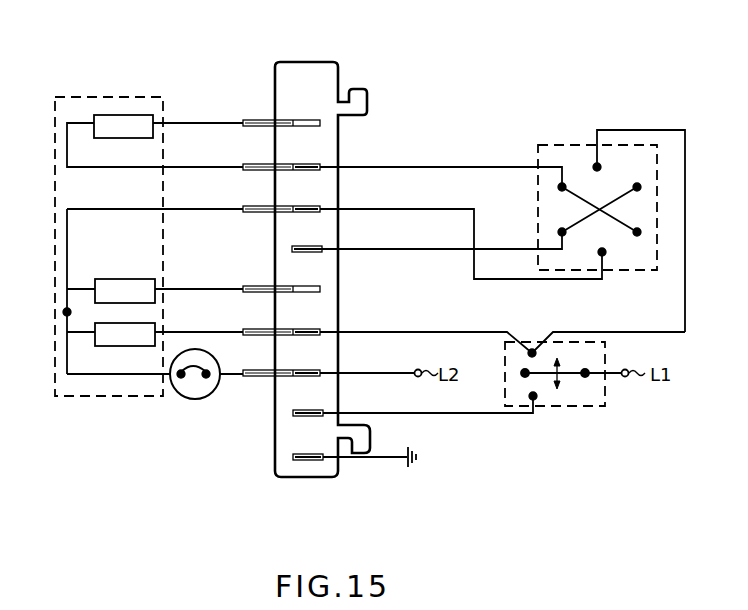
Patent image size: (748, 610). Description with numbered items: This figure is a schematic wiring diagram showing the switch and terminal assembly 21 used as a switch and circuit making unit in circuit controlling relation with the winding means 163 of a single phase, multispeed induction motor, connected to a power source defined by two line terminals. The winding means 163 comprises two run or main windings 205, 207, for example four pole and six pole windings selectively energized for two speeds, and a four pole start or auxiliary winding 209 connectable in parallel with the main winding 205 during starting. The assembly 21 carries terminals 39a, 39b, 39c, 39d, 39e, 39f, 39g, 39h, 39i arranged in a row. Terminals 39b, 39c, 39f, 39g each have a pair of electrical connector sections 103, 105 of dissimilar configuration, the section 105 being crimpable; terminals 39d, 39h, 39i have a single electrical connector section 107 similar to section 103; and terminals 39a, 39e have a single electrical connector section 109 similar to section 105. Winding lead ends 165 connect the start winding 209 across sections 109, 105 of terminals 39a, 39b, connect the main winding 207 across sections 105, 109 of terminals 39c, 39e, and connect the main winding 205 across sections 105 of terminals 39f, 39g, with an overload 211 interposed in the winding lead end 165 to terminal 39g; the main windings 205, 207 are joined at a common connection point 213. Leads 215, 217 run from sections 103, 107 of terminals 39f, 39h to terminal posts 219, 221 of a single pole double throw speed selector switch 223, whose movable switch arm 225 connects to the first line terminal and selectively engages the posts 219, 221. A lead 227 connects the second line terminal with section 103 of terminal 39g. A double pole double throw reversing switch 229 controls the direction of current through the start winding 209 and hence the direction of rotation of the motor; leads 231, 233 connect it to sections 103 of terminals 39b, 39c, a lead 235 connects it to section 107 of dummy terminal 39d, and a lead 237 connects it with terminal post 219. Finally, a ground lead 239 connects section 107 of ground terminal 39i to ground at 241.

The switch and terminal assembly 21 is at (270, 56).
The terminal 39a is at (296, 121).
The terminal 39b is at (296, 164).
The terminal 39c is at (296, 206).
The dummy terminal 39d is at (296, 246).
The terminal 39e is at (296, 286).
The terminal 39f is at (296, 329).
The terminal 39g is at (296, 370).
The terminal 39h is at (296, 410).
The ground terminal 39i is at (296, 454).
The electrical connector section 103 is at (326, 166).
The electrical connector section 105 is at (252, 164).
The electrical connector section 107 is at (326, 249).
The electrical connector section 109 is at (252, 121).
The winding means 163 is at (60, 96).
The winding lead ends 165 is at (190, 121).
The main winding 205 is at (125, 334).
The main winding 207 is at (125, 291).
The start winding 209 is at (123, 126).
The overload 211 is at (196, 400).
The common connection point 213 is at (64, 313).
The lead 215 is at (464, 330).
The lead 217 is at (453, 413).
The terminal post 219 is at (528, 355).
The terminal post 221 is at (541, 402).
The speed selector switch 223 is at (670, 428).
The movable switch arm 225 is at (572, 372).
The lead 227 is at (397, 376).
The reversing switch 229 is at (562, 136).
The lead 231 is at (447, 166).
The lead 233 is at (440, 208).
The lead 235 is at (425, 248).
The lead 237 is at (685, 294).
The ground lead 239 is at (366, 460).
The ground 241 is at (410, 468).